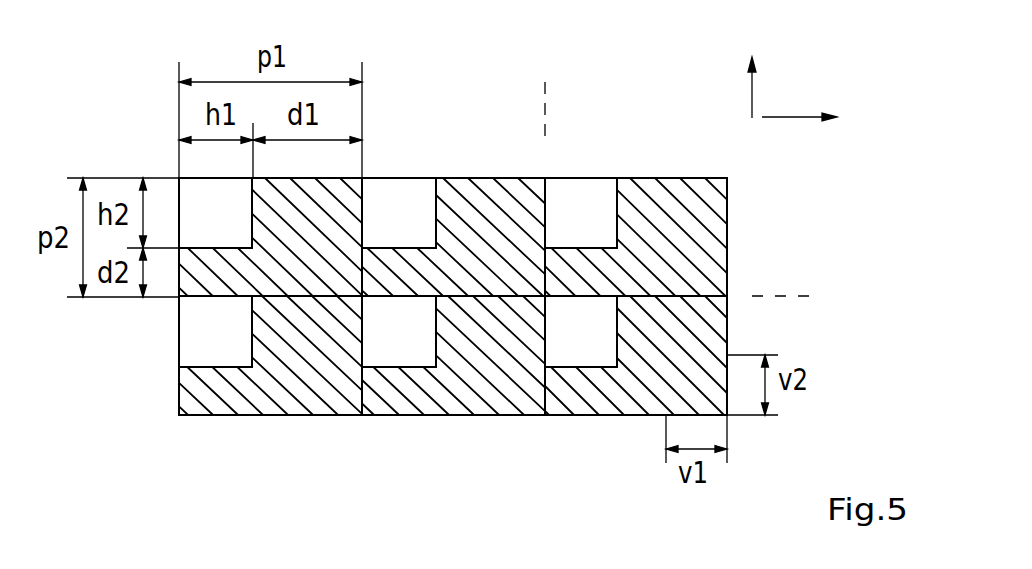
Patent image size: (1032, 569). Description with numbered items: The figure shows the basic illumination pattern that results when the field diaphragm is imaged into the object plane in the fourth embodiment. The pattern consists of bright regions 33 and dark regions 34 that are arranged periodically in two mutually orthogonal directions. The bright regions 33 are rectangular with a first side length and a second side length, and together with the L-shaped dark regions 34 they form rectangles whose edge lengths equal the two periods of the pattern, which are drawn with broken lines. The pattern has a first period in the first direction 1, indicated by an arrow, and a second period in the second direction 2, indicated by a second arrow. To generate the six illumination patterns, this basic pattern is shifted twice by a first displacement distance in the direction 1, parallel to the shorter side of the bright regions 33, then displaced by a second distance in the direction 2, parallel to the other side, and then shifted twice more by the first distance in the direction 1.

The bright regions 33 is at (392, 190).
The dark regions 34 is at (645, 190).
The first direction 1 is at (807, 129).
The second direction 2 is at (765, 79).